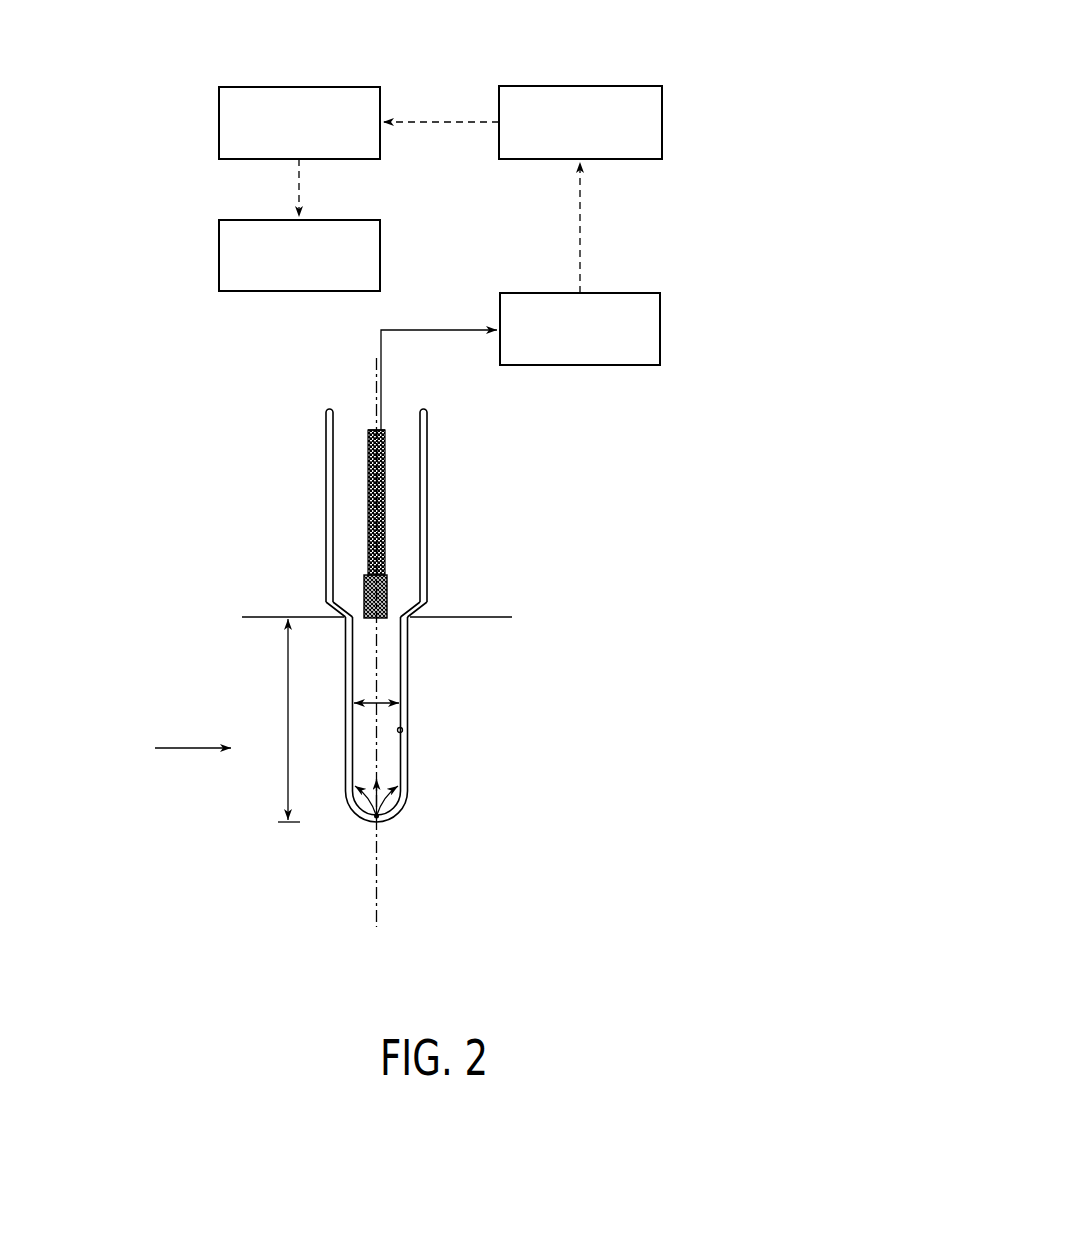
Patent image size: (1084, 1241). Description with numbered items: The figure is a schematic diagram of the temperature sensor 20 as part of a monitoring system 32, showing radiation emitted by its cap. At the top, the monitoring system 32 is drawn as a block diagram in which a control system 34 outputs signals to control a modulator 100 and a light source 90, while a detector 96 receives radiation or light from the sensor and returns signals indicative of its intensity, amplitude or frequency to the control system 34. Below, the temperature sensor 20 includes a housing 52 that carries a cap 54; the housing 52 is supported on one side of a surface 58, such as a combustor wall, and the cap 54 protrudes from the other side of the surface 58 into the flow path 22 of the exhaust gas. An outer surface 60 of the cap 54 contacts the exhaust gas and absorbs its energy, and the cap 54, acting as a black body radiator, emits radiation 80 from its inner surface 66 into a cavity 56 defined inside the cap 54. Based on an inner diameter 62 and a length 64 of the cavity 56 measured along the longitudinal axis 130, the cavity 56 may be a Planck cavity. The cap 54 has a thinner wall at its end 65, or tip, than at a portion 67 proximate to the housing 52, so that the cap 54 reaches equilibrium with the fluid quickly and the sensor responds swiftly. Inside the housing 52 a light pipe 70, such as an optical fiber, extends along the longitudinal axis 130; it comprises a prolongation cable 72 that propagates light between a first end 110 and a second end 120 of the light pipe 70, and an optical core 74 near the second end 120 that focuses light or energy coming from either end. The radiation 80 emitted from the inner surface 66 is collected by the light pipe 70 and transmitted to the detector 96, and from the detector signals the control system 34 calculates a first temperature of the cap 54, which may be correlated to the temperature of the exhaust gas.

The monitoring system 32 is at (697, 41).
The control system 34 is at (662, 122).
The detector 96 is at (660, 330).
The modulator 100 is at (219, 122).
The light source 90 is at (219, 254).
The temperature sensor 20 is at (155, 445).
The housing 52 is at (431, 468).
The prolongation cable 72 is at (386, 497).
The optical core 74 is at (389, 595).
The cavity 56 is at (393, 666).
The outer surface 60 is at (408, 762).
The cap 54 is at (404, 812).
The portion 67 is at (342, 630).
The end 65 is at (371, 827).
The light pipe 70 is at (365, 516).
The first end 110 is at (364, 432).
The second end 120 is at (365, 600).
The radiation 80 is at (379, 824).
The longitudinal axis 130 is at (377, 886).
The surface 58 is at (258, 617).
The length 64 is at (288, 720).
The inner diameter 62 is at (382, 700).
The inner surface 66 is at (404, 728).
The flow path 22 is at (185, 750).